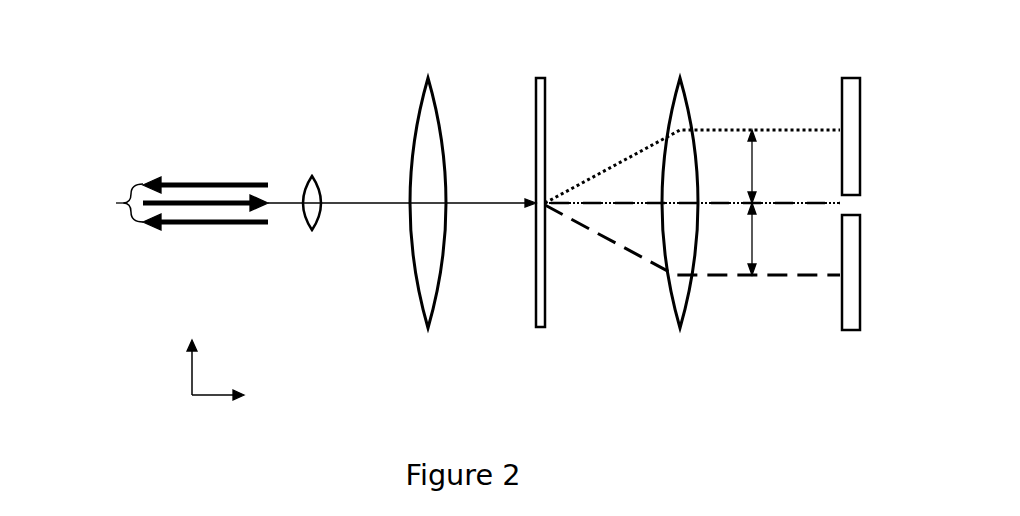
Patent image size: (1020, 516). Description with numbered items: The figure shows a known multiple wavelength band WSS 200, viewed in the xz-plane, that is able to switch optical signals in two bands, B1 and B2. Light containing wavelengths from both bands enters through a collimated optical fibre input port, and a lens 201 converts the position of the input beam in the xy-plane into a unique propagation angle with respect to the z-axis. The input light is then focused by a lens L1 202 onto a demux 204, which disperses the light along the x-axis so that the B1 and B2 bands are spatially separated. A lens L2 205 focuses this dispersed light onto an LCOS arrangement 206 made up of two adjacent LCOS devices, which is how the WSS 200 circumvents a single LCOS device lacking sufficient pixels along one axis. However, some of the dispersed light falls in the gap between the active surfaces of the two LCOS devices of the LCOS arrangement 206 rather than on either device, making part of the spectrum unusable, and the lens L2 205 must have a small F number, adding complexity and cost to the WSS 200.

The multiple wavelength band WSS 200 is at (171, 119).
The lens 201 is at (313, 177).
The lens L1 202 is at (429, 78).
The demux 204 is at (541, 78).
The lens L2 205 is at (681, 78).
The LCOS arrangement 206 is at (842, 92).